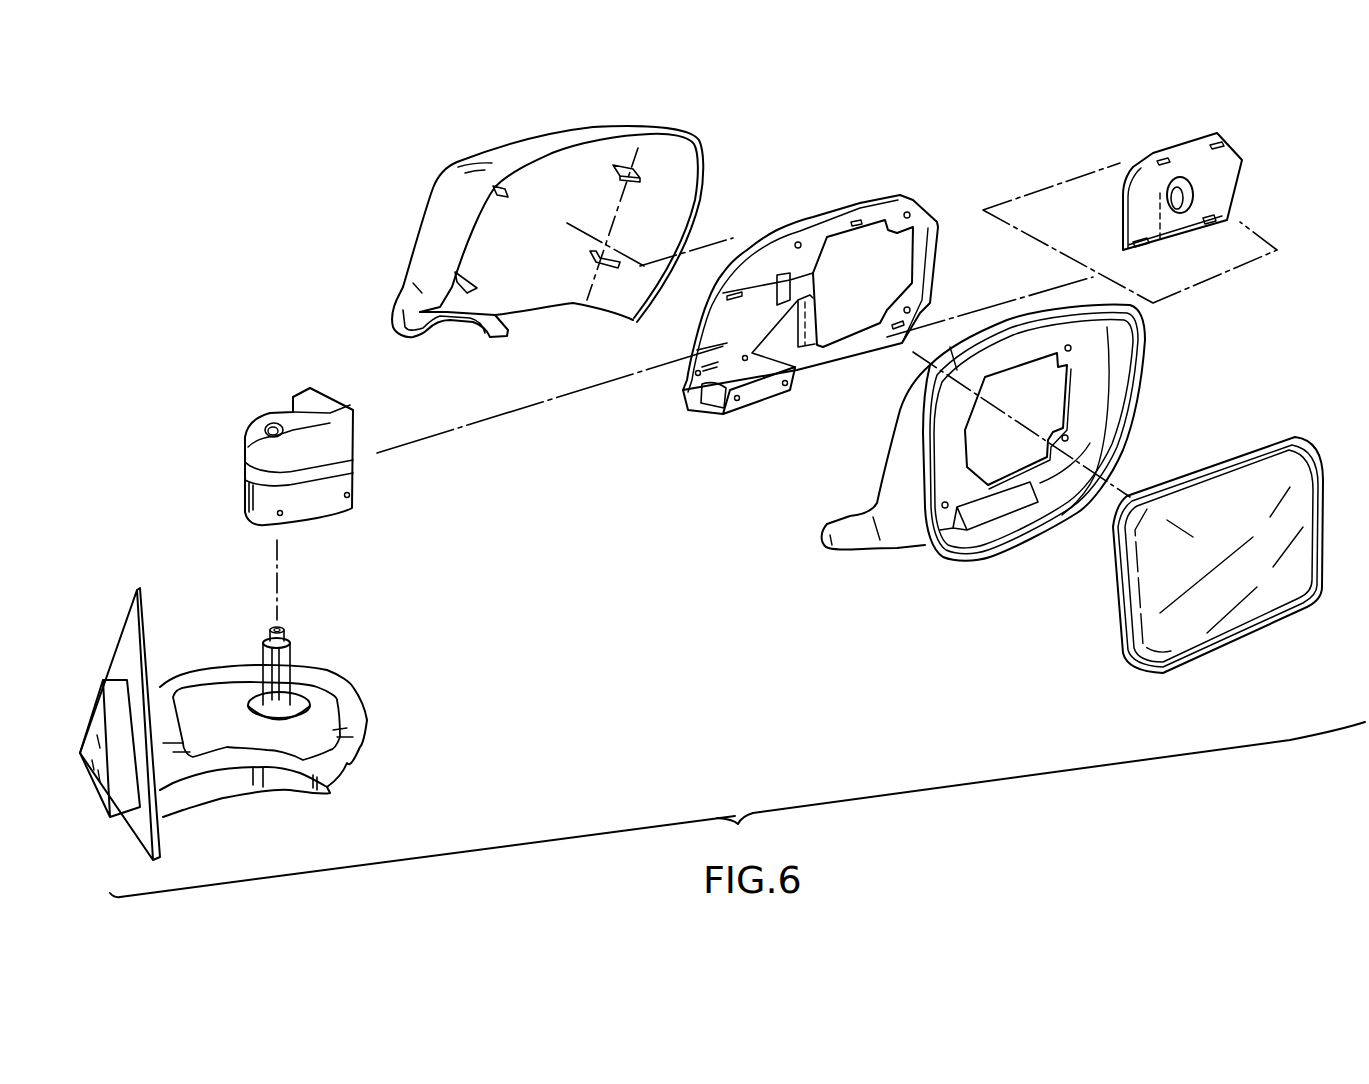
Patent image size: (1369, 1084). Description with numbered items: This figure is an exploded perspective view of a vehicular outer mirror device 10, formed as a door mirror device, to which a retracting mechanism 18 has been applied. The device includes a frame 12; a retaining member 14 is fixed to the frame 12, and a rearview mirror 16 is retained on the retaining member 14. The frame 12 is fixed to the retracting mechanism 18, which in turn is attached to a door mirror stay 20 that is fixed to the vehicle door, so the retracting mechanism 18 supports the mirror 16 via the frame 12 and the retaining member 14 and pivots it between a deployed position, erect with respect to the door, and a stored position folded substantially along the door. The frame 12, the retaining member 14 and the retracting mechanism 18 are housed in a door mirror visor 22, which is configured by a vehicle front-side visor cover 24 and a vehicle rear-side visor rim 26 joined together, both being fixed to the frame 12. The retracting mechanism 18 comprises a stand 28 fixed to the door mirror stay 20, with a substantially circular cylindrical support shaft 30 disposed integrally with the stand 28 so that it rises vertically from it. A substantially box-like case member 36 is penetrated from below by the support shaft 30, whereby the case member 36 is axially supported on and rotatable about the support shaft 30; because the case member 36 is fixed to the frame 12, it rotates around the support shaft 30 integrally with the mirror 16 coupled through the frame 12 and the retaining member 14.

The vehicular outer mirror device 10 is at (352, 186).
The frame 12 is at (822, 220).
The retaining member 14 is at (1227, 180).
The rearview mirror 16 is at (1262, 677).
The retracting mechanism 18 is at (214, 529).
The door mirror stay 20 is at (127, 650).
The door mirror visor 22 is at (854, 316).
The visor cover 24 is at (757, 108).
The visor rim 26 is at (1150, 372).
The stand 28 is at (303, 690).
The support shaft 30 is at (260, 663).
The case member 36 is at (350, 420).